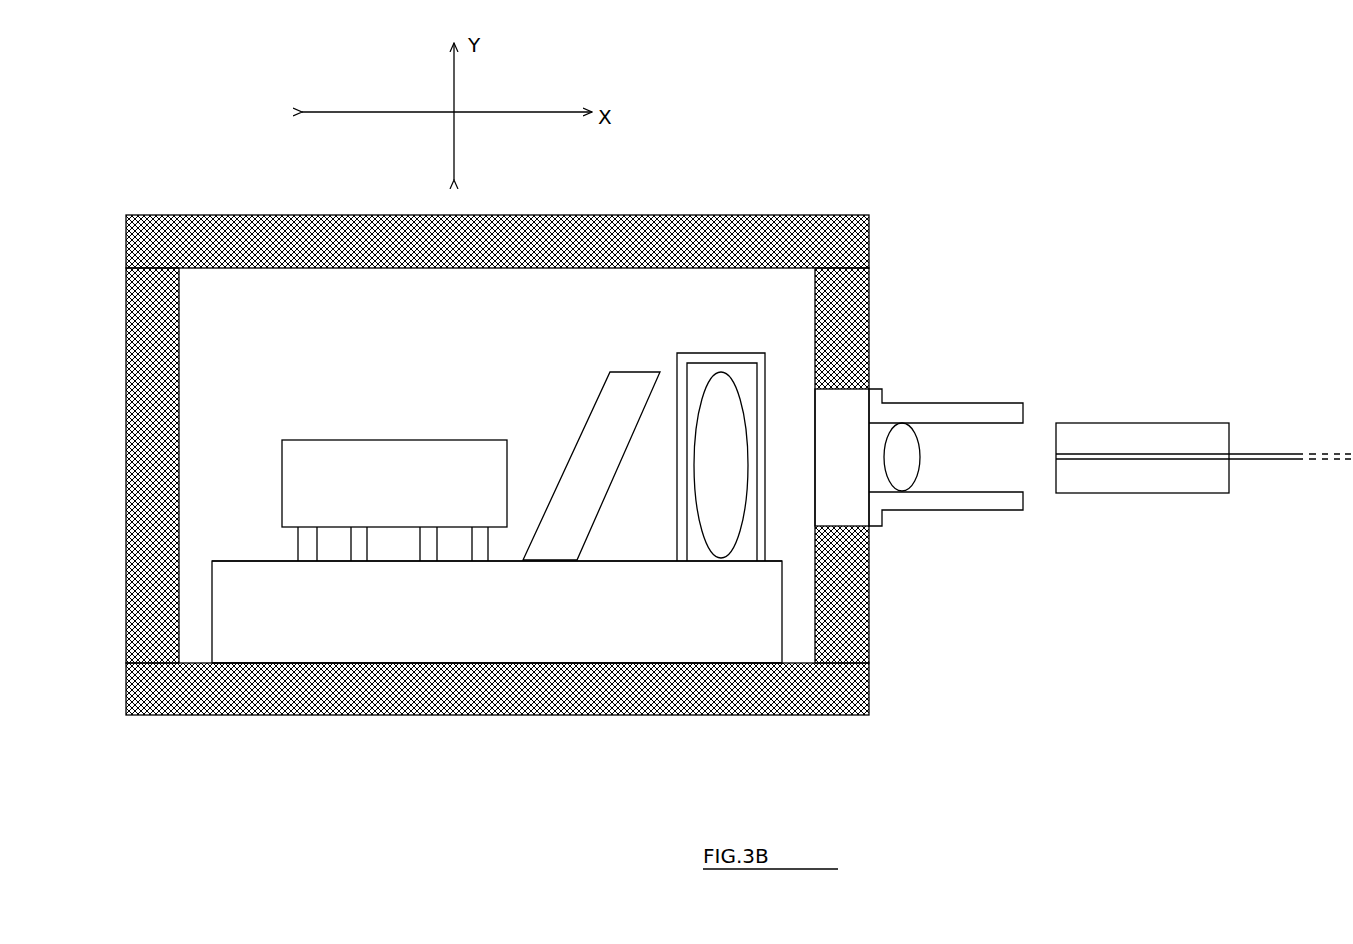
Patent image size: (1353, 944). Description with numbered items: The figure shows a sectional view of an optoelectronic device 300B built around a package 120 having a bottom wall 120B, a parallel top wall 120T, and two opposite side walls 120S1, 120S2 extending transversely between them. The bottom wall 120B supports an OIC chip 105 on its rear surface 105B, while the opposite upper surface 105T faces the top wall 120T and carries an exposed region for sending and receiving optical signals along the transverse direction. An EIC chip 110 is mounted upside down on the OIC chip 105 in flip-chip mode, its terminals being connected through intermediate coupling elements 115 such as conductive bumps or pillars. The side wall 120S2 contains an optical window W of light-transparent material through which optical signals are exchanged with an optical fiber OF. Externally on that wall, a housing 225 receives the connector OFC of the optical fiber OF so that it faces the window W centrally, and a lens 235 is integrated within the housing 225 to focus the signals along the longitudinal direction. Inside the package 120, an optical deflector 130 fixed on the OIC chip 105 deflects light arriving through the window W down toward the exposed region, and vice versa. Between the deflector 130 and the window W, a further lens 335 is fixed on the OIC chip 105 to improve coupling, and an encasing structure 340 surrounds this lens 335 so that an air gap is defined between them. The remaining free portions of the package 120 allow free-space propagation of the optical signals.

The optoelectronic device 300B is at (1170, 133).
The package 120 is at (869, 340).
The top wall 120T is at (868, 235).
The bottom wall 120B is at (868, 705).
The side wall 120S1 is at (179, 392).
The side wall 120S2 is at (868, 637).
The optical window W is at (815, 420).
The OIC chip 105 is at (528, 622).
The upper surface 105T is at (642, 563).
The rear surface 105B is at (298, 660).
The EIC chip 110 is at (335, 440).
The intermediate coupling elements 115 is at (292, 555).
The optical deflector 130 is at (592, 405).
The lens 335 is at (707, 380).
The encasing structure 340 is at (683, 455).
The housing 225 is at (950, 406).
The lens 235 is at (920, 470).
The connector OFC is at (1108, 424).
The optical fiber OF is at (1280, 463).